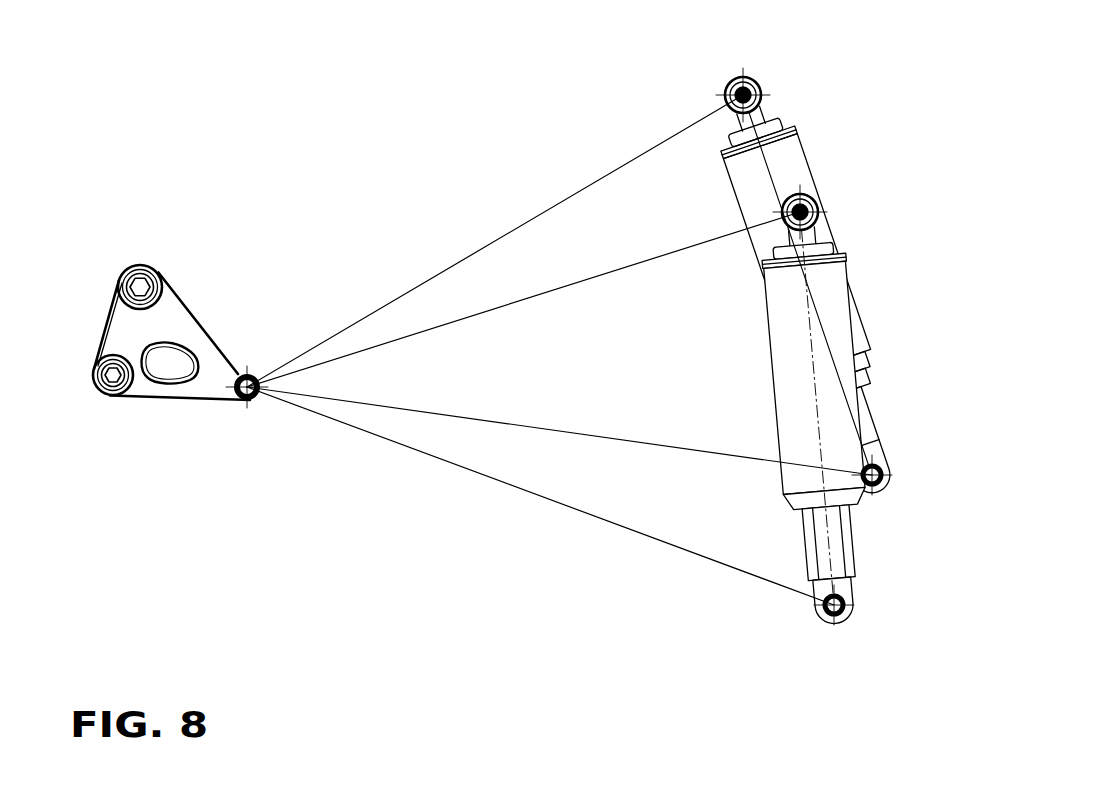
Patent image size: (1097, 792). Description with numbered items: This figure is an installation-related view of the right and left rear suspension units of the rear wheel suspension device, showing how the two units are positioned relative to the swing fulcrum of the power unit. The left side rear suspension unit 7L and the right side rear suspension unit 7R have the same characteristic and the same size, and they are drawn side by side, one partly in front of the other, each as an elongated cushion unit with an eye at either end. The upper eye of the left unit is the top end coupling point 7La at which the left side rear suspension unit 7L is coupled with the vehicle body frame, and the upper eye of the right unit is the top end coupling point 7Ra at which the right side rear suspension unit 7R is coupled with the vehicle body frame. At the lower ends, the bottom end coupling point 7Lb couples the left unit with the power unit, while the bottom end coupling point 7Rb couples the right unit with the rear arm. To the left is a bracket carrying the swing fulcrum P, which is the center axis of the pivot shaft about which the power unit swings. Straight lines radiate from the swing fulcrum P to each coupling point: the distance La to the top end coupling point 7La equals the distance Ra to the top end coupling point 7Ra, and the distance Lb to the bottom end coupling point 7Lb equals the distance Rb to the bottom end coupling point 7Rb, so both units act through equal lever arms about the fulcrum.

The right side rear suspension unit 7R is at (800, 136).
The left side rear suspension unit 7L is at (855, 322).
The top end coupling point 7Ra is at (752, 79).
The top end coupling point 7La is at (815, 196).
The bottom end coupling point 7Rb is at (883, 479).
The bottom end coupling point 7Lb is at (846, 615).
The swing fulcrum P is at (240, 405).
The distance Ra is at (649, 150).
The distance La is at (640, 260).
The distance Rb is at (715, 453).
The distance Lb is at (718, 567).